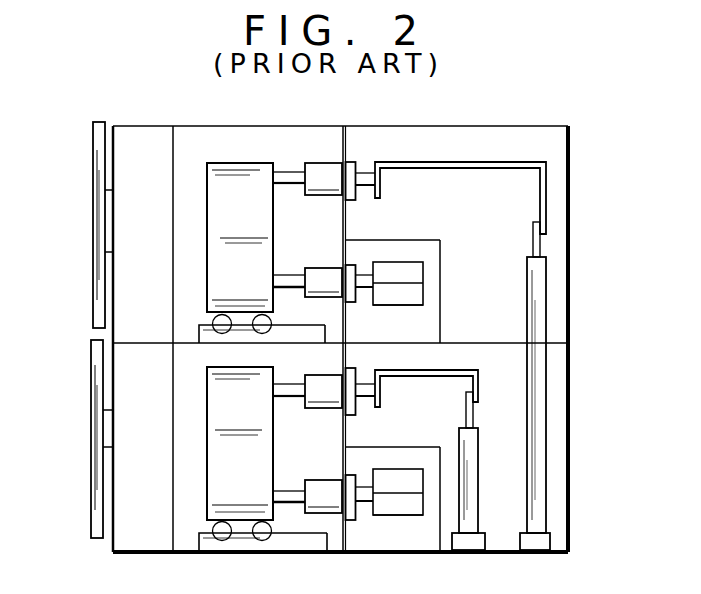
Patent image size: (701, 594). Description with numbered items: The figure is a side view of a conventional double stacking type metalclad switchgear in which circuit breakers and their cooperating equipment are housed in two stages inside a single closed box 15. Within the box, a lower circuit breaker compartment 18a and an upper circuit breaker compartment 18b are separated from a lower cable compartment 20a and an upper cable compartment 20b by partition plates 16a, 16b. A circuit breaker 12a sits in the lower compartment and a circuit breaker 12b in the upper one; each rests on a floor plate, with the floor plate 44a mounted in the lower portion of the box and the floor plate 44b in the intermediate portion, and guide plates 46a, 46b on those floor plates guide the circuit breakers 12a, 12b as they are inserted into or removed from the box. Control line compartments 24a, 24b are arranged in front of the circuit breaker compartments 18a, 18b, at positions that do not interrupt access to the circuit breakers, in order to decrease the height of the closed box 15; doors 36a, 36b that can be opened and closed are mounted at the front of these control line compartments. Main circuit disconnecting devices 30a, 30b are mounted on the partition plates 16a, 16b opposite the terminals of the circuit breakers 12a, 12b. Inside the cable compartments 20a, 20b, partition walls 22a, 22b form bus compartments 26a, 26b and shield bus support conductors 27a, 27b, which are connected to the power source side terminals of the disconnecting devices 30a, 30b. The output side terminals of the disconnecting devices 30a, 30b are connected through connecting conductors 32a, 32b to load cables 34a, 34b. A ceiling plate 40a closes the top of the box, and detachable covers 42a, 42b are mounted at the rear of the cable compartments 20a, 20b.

The closed box 15 is at (503, 127).
The ceiling plate 40a is at (336, 127).
The circuit breaker compartment 18b is at (204, 136).
The circuit breaker compartment 18a is at (184, 540).
The cable compartment 20b is at (560, 151).
The cable compartment 20a is at (520, 476).
The detachable cover 42b is at (571, 289).
The detachable cover 42a is at (571, 527).
The door 36b is at (93, 237).
The door 36a is at (93, 427).
The control line compartment 24b is at (128, 300).
The control line compartment 24a is at (128, 521).
The circuit breaker 12b is at (238, 175).
The circuit breaker 12a is at (240, 510).
The main circuit disconnecting device 30b is at (325, 170).
The main circuit disconnecting device 30a is at (326, 409).
The connecting conductor 32b is at (468, 164).
The connecting conductor 32a is at (477, 394).
The load cable 34b is at (548, 430).
The load cable 34a is at (478, 520).
The partition plate 16b is at (345, 227).
The partition plate 16a is at (345, 427).
The bus compartment 26b is at (432, 252).
The bus compartment 26a is at (368, 547).
The partition wall 22b is at (442, 288).
The partition wall 22a is at (440, 485).
The bus support conductor 27b is at (418, 306).
The bus support conductor 27a is at (379, 516).
The floor plate 44b is at (362, 331).
The floor plate 44a is at (271, 553).
The guide plate 46b is at (313, 334).
The guide plate 46a is at (321, 544).